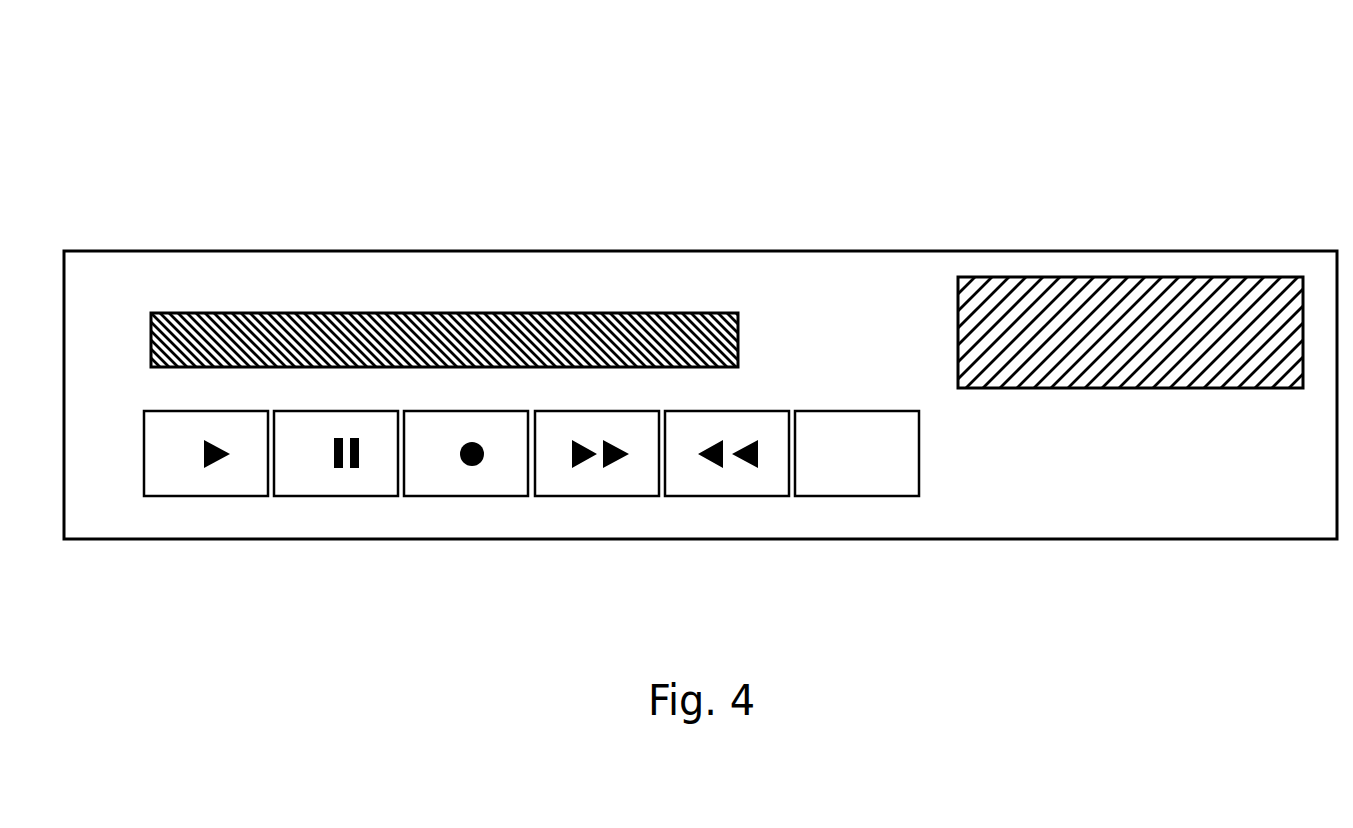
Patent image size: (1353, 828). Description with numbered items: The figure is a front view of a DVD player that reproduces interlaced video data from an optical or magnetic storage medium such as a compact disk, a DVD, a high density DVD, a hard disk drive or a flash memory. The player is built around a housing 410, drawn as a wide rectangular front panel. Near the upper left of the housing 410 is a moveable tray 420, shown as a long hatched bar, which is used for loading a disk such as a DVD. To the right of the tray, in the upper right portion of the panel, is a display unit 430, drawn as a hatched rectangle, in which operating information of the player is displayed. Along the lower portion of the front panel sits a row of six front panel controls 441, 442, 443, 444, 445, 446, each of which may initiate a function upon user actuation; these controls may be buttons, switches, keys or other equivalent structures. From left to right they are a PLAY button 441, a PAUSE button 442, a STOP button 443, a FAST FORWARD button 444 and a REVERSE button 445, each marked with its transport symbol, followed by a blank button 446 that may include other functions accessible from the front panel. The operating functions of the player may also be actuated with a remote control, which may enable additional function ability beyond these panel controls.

The housing 410 is at (637, 251).
The moveable tray 420 is at (409, 313).
The display unit 430 is at (1158, 300).
The PLAY button 441 is at (243, 482).
The PAUSE button 442 is at (345, 482).
The STOP button 443 is at (472, 482).
The FAST FORWARD button 444 is at (602, 482).
The REVERSE button 445 is at (734, 483).
The button 446 is at (864, 483).